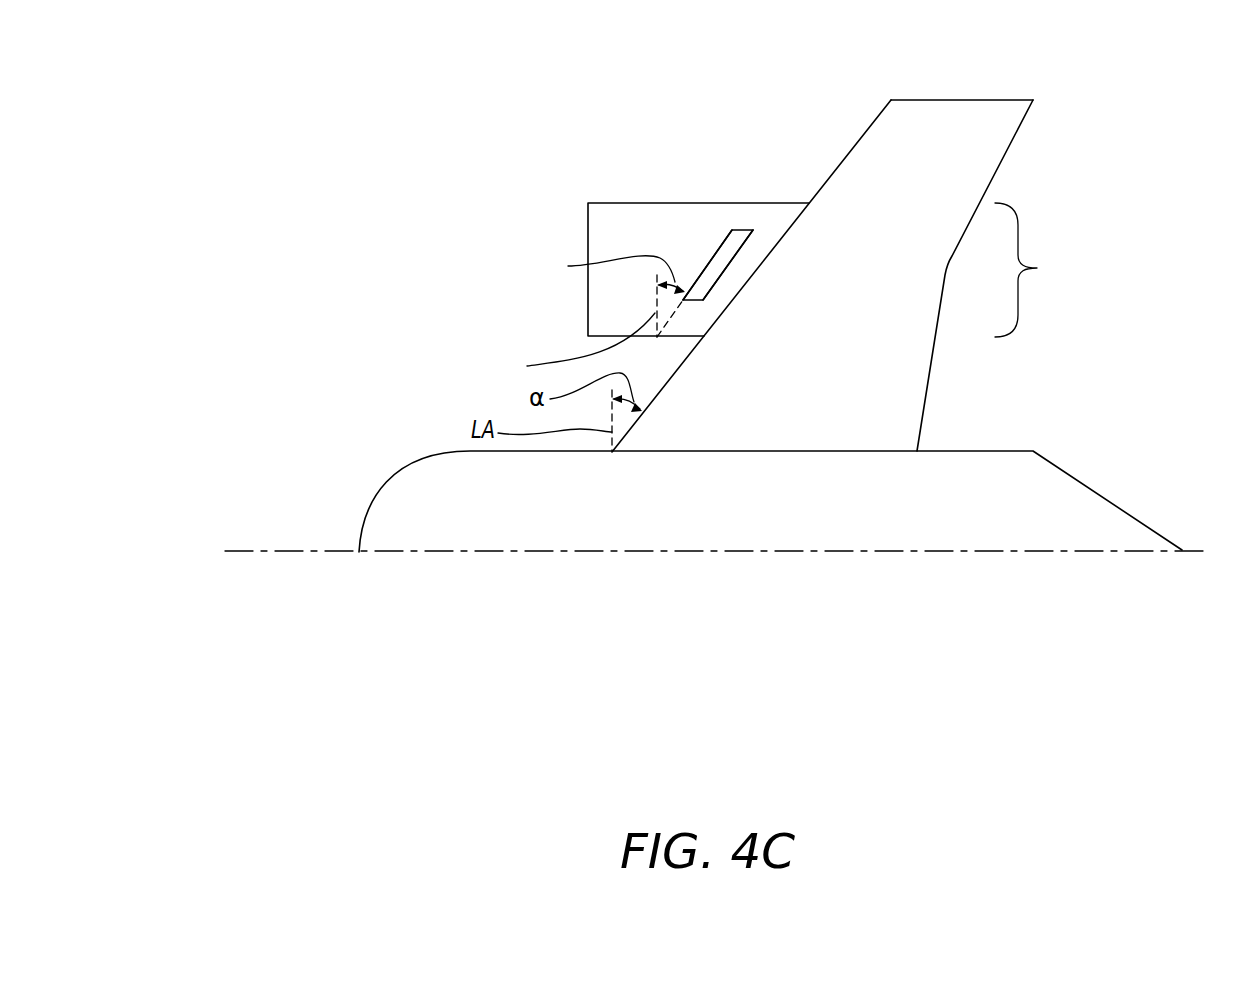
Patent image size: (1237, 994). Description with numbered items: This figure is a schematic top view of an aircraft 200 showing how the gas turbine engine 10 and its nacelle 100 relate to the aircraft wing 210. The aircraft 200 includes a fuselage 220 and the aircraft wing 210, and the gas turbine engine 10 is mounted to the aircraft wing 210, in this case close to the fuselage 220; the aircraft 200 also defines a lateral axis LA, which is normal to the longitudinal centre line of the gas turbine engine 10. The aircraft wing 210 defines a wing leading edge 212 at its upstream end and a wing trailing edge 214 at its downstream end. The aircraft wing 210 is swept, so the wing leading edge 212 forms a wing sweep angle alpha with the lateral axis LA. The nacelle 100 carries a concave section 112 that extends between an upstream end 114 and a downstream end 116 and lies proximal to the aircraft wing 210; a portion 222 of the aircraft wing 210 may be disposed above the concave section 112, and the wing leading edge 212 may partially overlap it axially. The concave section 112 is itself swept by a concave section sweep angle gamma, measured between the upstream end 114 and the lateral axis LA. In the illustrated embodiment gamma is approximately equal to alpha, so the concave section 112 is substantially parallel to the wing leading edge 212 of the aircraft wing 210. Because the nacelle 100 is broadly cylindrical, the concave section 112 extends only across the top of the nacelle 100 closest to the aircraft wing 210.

The aircraft 200 is at (202, 99).
The aircraft wing 210 is at (982, 116).
The wing leading edge 212 is at (848, 152).
The wing trailing edge 214 is at (992, 182).
The portion of the aircraft wing 222 is at (1039, 270).
The fuselage 220 is at (998, 461).
The gas turbine engine 10 is at (550, 334).
The nacelle 100 is at (588, 228).
The concave section 112 is at (737, 240).
The upstream end 114 is at (707, 258).
The downstream end 116 is at (755, 242).